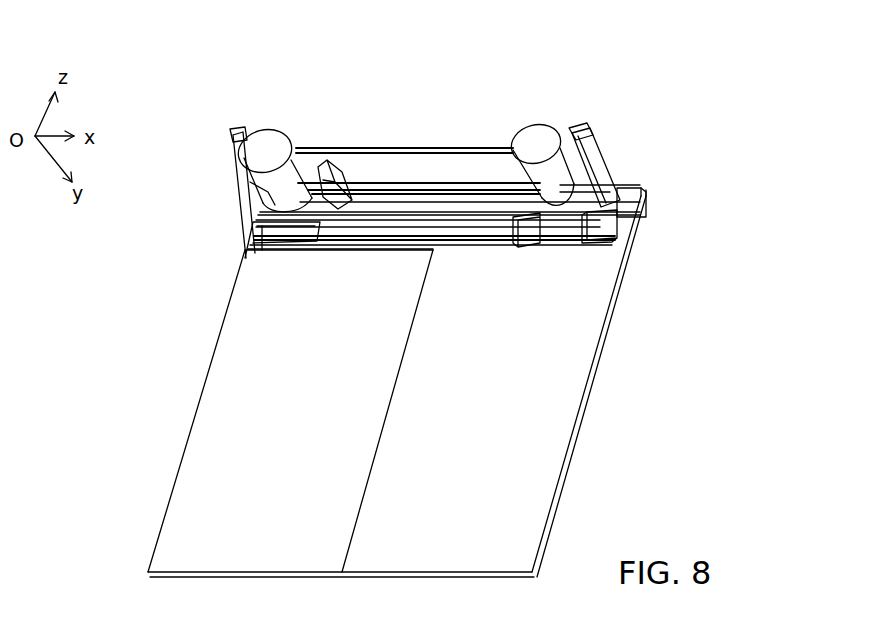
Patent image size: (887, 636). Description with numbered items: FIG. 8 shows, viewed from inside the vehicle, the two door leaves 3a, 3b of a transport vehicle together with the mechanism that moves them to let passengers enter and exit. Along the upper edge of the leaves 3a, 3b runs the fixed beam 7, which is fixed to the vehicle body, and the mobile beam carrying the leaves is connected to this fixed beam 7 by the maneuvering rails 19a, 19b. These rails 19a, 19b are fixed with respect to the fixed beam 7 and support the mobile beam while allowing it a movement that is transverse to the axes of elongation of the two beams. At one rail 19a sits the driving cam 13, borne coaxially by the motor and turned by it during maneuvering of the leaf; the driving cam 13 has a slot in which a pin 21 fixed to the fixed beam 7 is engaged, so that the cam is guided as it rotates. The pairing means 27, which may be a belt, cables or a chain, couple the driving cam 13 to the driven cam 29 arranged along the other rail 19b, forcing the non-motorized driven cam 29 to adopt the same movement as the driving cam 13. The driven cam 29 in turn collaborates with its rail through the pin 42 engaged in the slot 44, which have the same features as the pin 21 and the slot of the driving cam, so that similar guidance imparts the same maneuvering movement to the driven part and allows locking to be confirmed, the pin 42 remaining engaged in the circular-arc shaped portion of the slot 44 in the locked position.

The door leaf 3a is at (228, 396).
The door leaf 3b is at (557, 403).
The fixed beam 7 is at (398, 160).
The driving cam 13 is at (274, 194).
The maneuvering rail 19a is at (240, 157).
The maneuvering rail 19b is at (591, 143).
The pin 21 is at (250, 180).
The pairing means 27 is at (448, 183).
The driven cam 29 is at (554, 124).
The pin 42 is at (590, 206).
The slot 44 is at (555, 200).